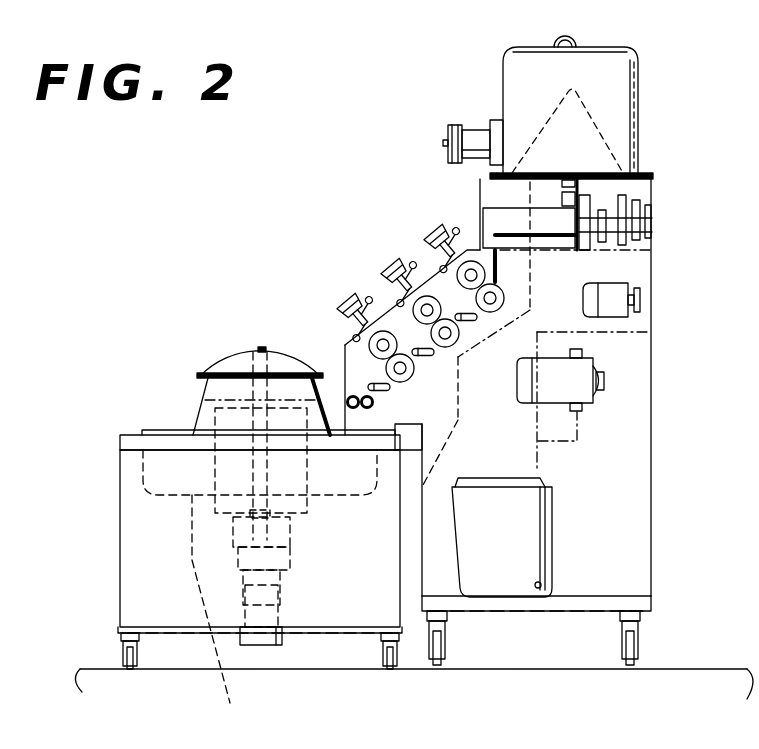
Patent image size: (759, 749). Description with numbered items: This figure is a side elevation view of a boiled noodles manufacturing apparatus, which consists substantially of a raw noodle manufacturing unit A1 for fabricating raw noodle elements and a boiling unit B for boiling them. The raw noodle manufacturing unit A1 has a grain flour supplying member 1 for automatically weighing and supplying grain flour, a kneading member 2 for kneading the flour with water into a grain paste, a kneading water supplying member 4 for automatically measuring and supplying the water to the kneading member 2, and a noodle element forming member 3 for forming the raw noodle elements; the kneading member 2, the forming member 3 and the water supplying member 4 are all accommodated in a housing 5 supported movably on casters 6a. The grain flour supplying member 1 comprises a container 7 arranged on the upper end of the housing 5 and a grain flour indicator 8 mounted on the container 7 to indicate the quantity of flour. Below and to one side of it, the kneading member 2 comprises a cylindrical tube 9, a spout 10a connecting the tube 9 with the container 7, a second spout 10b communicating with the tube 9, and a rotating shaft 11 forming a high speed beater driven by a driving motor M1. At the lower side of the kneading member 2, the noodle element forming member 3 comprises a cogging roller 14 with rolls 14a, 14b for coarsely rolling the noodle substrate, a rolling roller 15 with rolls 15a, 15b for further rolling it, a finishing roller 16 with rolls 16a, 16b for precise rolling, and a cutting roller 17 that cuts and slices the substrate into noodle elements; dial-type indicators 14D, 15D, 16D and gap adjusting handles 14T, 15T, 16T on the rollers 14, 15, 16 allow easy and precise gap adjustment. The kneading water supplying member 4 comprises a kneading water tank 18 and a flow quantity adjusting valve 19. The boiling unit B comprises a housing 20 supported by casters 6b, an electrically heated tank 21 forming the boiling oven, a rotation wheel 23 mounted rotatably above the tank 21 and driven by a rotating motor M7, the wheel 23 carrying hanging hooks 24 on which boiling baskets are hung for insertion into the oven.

The grain flour supplying member 1 is at (642, 75).
The kneading member 2 is at (522, 200).
The noodle element forming member 3 is at (366, 252).
The kneading water supplying member 4 is at (586, 424).
The housing 5 is at (652, 456).
The casters 6a is at (450, 645).
The casters 6b is at (134, 665).
The container 7 is at (627, 57).
The grain flour indicator 8 is at (457, 125).
The cylindrical tube 9 is at (545, 223).
The spout 10a is at (578, 190).
The second spout 10b is at (502, 247).
The rotating shaft 11 is at (600, 218).
The cogging roller 14 is at (492, 318).
The roll 14a is at (458, 236).
The roll 14b is at (562, 367).
The dial-type indicator 14D is at (456, 260).
The gap adjusting handle 14T is at (440, 220).
The rolling roller 15 is at (460, 360).
The roll 15a is at (386, 300).
The roll 15b is at (456, 352).
The dial-type indicator 15D is at (414, 300).
The gap adjusting handle 15T is at (400, 258).
The finishing roller 16 is at (398, 392).
The roll 16a is at (347, 345).
The roll 16b is at (440, 400).
The dial-type indicator 16D is at (372, 334).
The gap adjusting handle 16T is at (352, 306).
The cutting roller 17 is at (350, 410).
The kneading water tank 18 is at (550, 555).
The flow quantity adjusting valve 19 is at (640, 378).
The housing 20 is at (130, 585).
The tank 21 is at (228, 608).
The rotation wheel 23 is at (235, 358).
The hanging hooks 24 is at (205, 378).
The raw noodle manufacturing unit A1 is at (655, 505).
The boiling unit B is at (116, 545).
The driving motor M1 is at (612, 288).
The rotating motor M7 is at (265, 640).